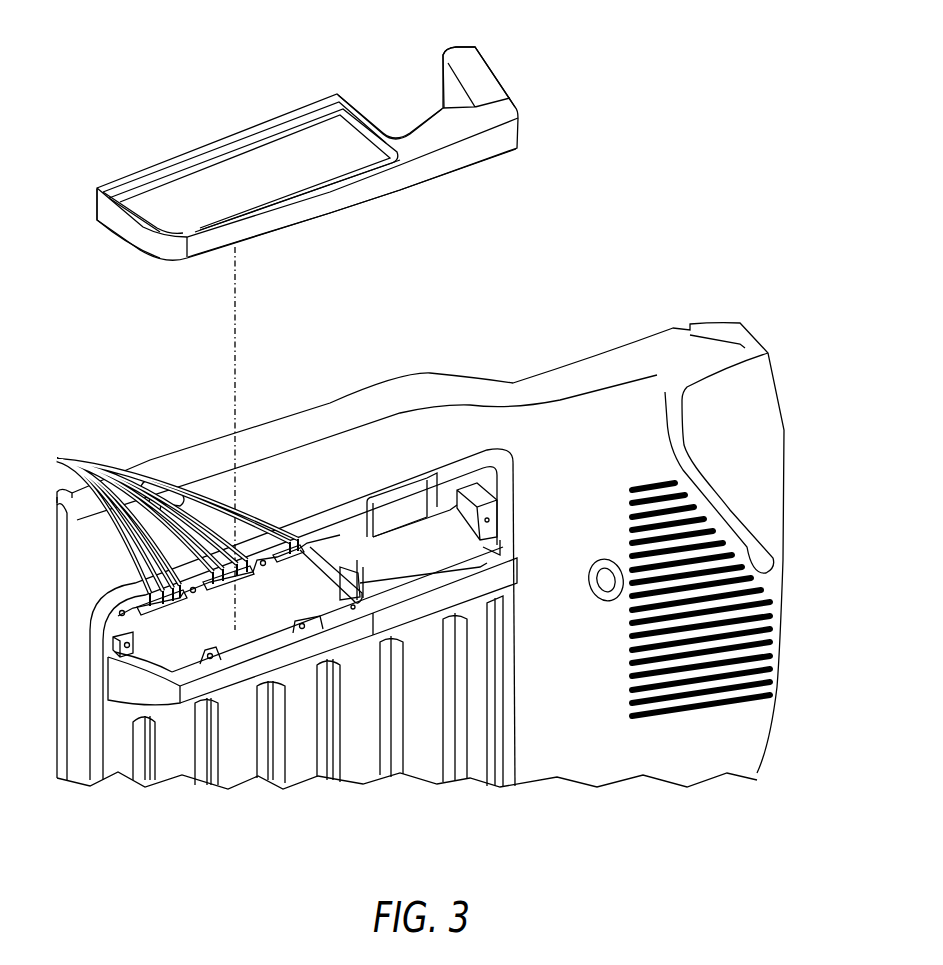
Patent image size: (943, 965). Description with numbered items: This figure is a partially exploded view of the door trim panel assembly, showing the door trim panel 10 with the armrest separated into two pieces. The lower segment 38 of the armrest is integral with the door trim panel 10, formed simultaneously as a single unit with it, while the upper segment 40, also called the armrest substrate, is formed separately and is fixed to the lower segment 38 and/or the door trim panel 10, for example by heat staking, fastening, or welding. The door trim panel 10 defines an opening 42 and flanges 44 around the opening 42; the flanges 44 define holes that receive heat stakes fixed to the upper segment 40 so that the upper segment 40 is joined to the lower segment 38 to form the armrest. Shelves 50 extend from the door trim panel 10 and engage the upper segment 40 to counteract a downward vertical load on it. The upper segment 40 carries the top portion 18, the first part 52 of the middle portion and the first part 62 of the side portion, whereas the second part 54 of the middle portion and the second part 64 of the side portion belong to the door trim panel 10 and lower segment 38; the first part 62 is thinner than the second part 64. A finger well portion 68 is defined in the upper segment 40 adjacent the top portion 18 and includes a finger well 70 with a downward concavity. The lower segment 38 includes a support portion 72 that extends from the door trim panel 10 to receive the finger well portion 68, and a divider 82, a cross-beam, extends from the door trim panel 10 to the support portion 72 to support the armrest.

The door trim panel 10 is at (588, 487).
The top portion 18 is at (182, 195).
The lower segment 38 is at (123, 682).
The upper segment 40 is at (537, 82).
The opening 42 is at (219, 618).
The flanges 44 is at (213, 662).
The shelves 50 is at (57, 460).
The first part 52 is at (293, 217).
The second part 54 is at (277, 660).
The first part 62 is at (127, 220).
The second part 64 is at (137, 690).
The finger well portion 68 is at (414, 144).
The finger well 70 is at (418, 557).
The support portion 72 is at (468, 590).
The divider 82 is at (358, 562).